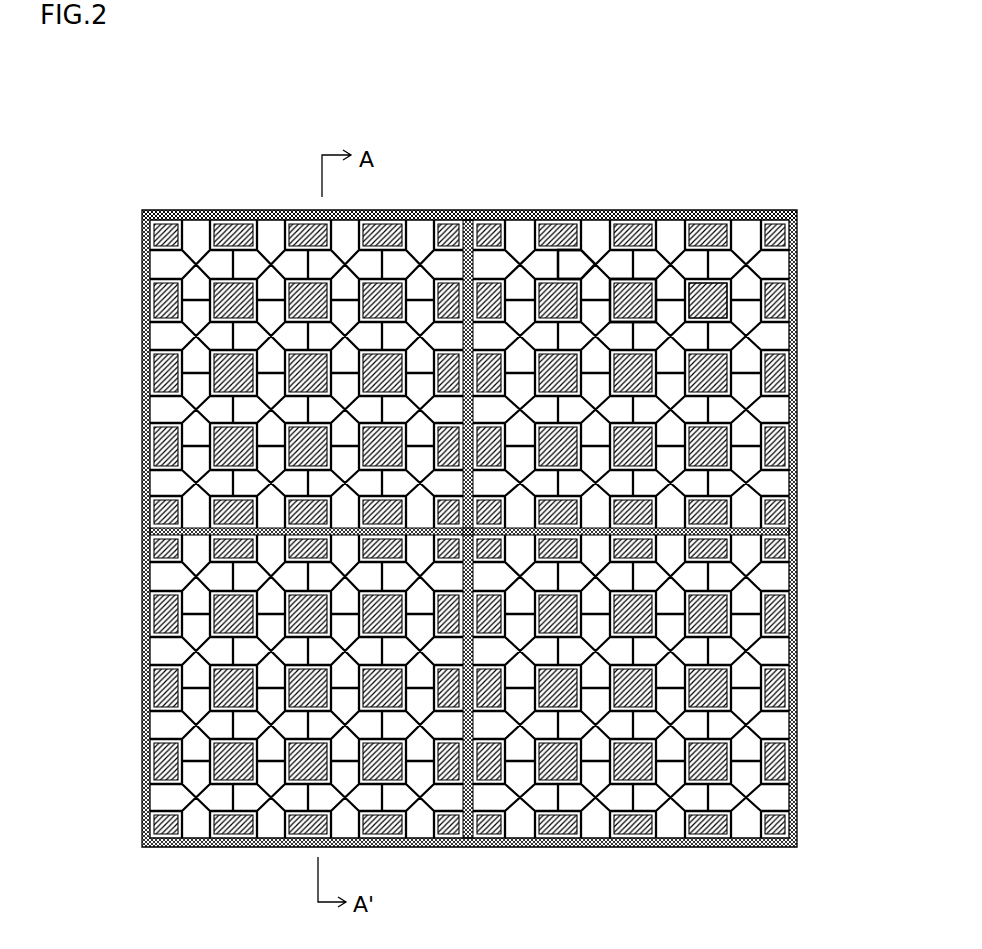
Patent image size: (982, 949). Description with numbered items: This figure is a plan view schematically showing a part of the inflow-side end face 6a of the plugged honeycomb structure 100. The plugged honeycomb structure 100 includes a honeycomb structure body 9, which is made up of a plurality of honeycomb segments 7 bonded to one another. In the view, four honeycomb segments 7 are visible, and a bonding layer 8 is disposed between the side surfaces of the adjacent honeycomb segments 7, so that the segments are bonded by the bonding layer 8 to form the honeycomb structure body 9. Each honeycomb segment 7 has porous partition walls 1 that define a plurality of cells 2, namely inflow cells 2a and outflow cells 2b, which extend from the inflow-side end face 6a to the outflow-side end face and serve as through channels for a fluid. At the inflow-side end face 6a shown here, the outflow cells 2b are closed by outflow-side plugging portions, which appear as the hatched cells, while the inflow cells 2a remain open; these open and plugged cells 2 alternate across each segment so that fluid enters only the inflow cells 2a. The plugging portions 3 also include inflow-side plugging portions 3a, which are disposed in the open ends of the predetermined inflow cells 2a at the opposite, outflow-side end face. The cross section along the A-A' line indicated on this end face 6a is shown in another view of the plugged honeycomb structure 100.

The plugged honeycomb structure 100 is at (846, 78).
The partition walls 1 is at (513, 263).
The cells 2 is at (627, 239).
The inflow cells 2a is at (568, 265).
The outflow cells 2b is at (643, 298).
The plugging portions 3 is at (516, 529).
The inflow-side plugging portions 3a is at (708, 293).
The inflow-side end face 6a is at (207, 208).
The honeycomb segments 7 is at (280, 219).
The bonding layer 8 is at (463, 228).
The honeycomb structure body 9 is at (786, 196).